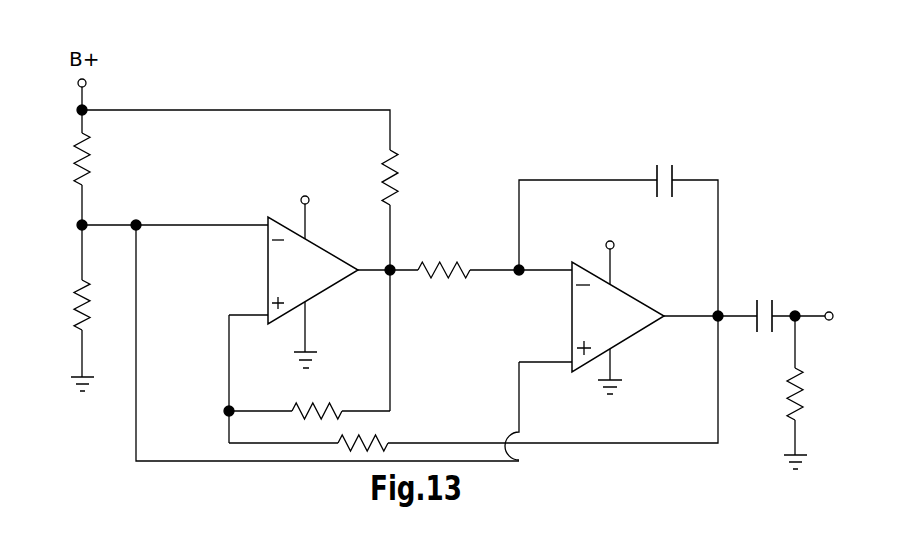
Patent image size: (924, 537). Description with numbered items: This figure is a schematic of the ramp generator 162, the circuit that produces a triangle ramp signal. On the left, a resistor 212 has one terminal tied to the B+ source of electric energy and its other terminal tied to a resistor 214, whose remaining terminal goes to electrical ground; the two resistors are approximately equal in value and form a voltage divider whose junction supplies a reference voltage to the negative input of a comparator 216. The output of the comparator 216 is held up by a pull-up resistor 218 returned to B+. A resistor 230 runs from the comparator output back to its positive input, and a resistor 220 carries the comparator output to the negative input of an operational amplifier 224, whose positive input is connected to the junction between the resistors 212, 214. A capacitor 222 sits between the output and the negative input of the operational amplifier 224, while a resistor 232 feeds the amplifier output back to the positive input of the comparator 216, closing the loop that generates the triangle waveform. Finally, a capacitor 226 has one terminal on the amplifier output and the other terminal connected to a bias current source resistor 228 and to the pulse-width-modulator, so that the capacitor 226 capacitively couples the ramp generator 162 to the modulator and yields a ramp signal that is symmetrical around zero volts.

The ramp generator 162 is at (372, 77).
The resistor 212 is at (76, 180).
The resistor 214 is at (76, 325).
The comparator 216 is at (340, 262).
The pull-up resistor 218 is at (398, 166).
The resistor 220 is at (452, 262).
The capacitor 222 is at (673, 168).
The operational amplifier 224 is at (582, 262).
The capacitor 226 is at (774, 301).
The bias current source resistor 228 is at (792, 415).
The resistor 230 is at (322, 408).
The resistor 232 is at (378, 441).